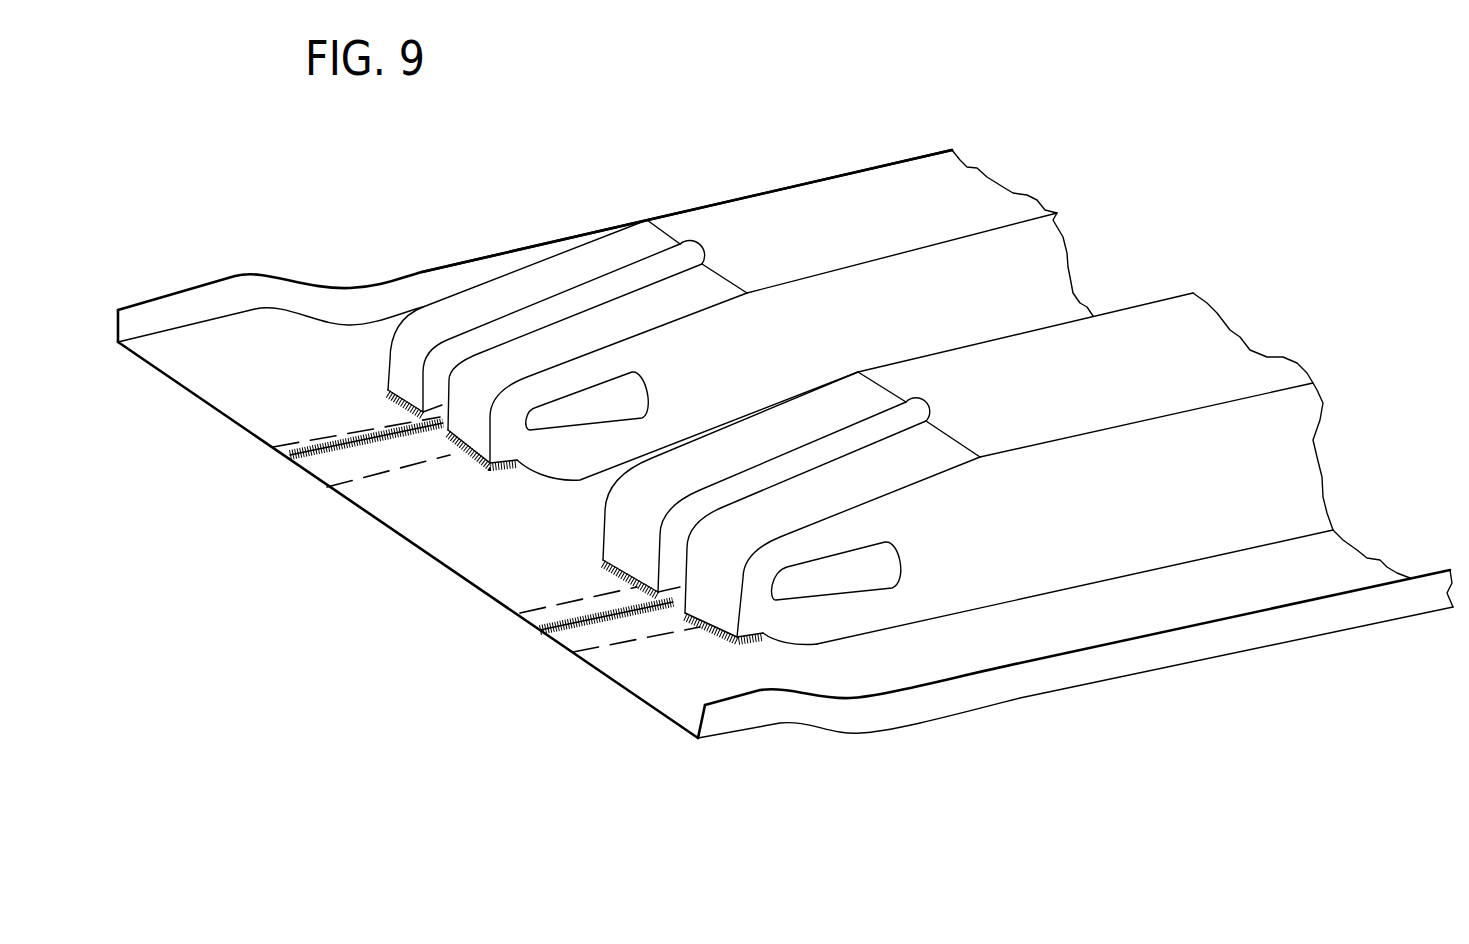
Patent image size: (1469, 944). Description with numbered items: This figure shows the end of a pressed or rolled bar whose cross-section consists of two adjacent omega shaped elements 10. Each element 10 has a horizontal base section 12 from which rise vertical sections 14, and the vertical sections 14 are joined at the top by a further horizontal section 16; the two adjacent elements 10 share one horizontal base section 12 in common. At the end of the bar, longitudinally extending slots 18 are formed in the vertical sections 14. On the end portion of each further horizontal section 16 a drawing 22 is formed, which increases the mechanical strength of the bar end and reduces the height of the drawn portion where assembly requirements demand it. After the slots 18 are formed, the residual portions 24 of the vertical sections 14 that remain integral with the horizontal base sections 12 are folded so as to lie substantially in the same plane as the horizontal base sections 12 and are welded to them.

The omega shaped element 10 is at (1010, 180).
The horizontal base section 12 is at (207, 407).
The vertical section 14 is at (1040, 267).
The further horizontal section 16 is at (815, 192).
The slot 18 is at (650, 397).
The drawing 22 is at (665, 263).
The residual portion 24 is at (297, 447).